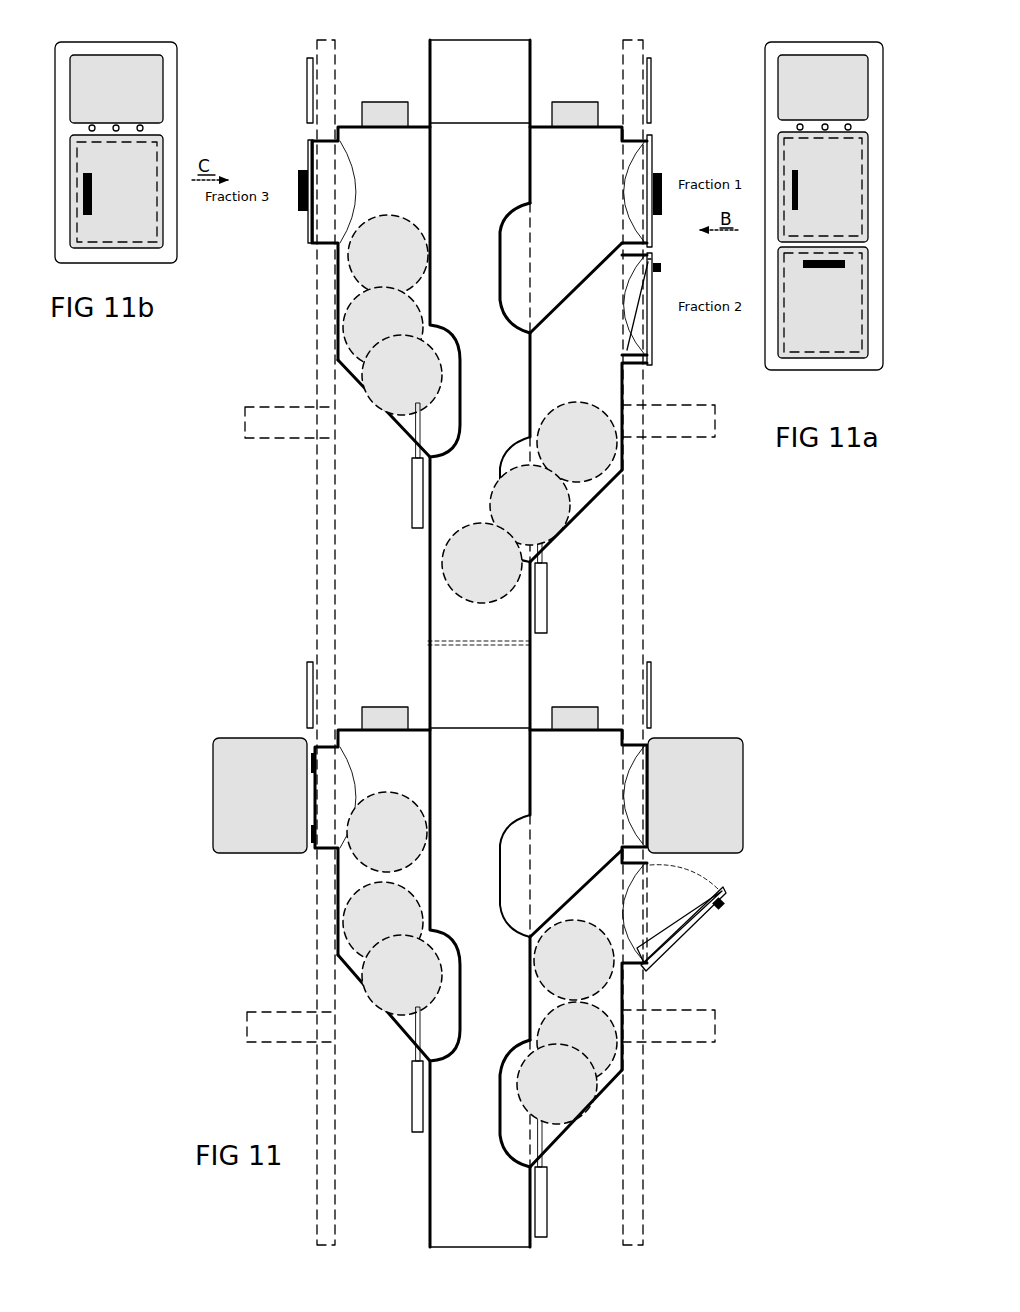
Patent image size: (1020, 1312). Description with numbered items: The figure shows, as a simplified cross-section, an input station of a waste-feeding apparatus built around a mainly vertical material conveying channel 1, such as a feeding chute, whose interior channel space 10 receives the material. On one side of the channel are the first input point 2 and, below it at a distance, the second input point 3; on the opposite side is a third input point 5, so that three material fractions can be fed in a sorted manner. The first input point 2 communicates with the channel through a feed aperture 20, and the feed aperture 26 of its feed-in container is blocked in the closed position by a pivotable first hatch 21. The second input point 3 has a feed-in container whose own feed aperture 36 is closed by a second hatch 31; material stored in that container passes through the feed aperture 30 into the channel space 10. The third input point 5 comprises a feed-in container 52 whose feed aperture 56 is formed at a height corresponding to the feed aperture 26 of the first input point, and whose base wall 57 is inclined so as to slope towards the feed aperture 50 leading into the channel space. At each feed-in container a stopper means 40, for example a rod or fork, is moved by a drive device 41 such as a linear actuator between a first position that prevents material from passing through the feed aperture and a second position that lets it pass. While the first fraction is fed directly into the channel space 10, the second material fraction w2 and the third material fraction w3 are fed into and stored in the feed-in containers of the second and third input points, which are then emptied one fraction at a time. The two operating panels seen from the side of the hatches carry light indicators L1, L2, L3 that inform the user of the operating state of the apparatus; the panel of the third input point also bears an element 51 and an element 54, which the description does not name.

In FIG. 11, the material conveying channel 1 is at (425, 574).
In FIG. 11, the first input point 2 is at (653, 163).
In FIG. 11, the second input point 3 is at (660, 281).
In FIG. 11, the third input point 5 is at (297, 165).
In FIG. 11, the channel space 10 is at (428, 605).
In FIG. 11, the feed aperture of the first input point 20 is at (517, 252).
In FIG. 11, the first hatch 21 is at (651, 226).
In FIG. 11A, the first hatch 21 is at (850, 220).
In FIG. 11, the feed aperture of the feed-in container of the first input point 26 is at (635, 786).
In FIG. 11, the feed aperture of the second input point 30 is at (523, 455).
In FIG. 11, the second hatch 31 is at (651, 305).
In FIG. 11A, the second hatch 31 is at (850, 300).
In FIG. 11, the feed aperture of the feed-in container of the second input point 36 is at (640, 902).
In FIG. 11, the stopper means 40 is at (410, 436).
In FIG. 11, the drive device 41 is at (410, 470).
In FIG. 11, the feed aperture of the third input point 50 is at (433, 382).
In FIG. 11, the third collecting container 51 is at (306, 232).
In FIG. 11B, the third collecting container 51 is at (70, 222).
In FIG. 11, the feed-in container of the third input point 52 is at (345, 358).
In FIG. 11, the blocking bar 54 is at (312, 768).
In FIG. 11, the feed aperture of the feed-in container of the third input point 56 is at (322, 790).
In FIG. 11, the base wall 57 is at (350, 397).
In FIG. 11, the second material fraction w2 is at (622, 470).
In FIG. 11, the third material fraction w3 is at (355, 330).
In FIG. 11A, the light indicator L1 is at (800, 127).
In FIG. 11B, the light indicator L1 is at (92, 128).
In FIG. 11A, the light indicator L2 is at (825, 127).
In FIG. 11B, the light indicator L2 is at (116, 128).
In FIG. 11A, the light indicator L3 is at (848, 127).
In FIG. 11B, the light indicator L3 is at (140, 128).